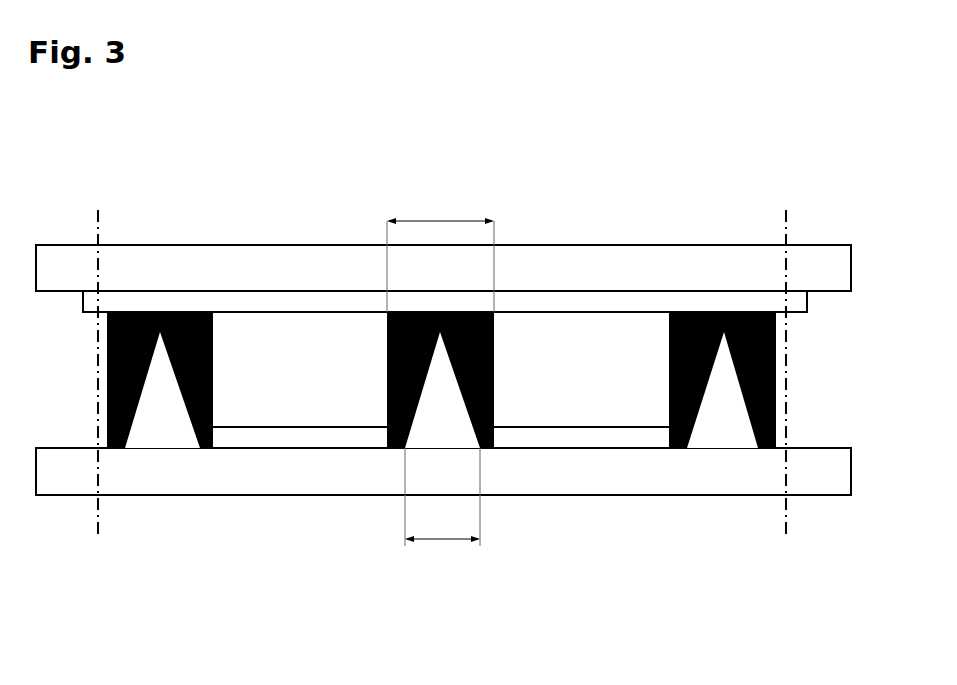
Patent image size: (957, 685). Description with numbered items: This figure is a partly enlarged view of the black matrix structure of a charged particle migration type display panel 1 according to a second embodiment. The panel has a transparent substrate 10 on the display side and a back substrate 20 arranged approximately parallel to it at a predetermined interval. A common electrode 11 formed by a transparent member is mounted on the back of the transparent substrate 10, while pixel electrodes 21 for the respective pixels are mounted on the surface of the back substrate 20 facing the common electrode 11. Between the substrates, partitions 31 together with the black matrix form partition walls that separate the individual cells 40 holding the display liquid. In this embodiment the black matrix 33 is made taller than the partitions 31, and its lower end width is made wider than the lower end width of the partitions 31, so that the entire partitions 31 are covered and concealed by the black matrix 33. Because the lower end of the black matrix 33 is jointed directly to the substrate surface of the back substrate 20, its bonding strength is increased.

The charged particle migration type display panel 1 is at (447, 117).
The transparent substrate 10 is at (195, 258).
The common electrode 11 is at (342, 298).
The back substrate 20 is at (282, 480).
The pixel electrodes 21 is at (333, 440).
The partitions 31 is at (174, 430).
The black matrix 33 is at (213, 328).
The cells 40 is at (577, 345).